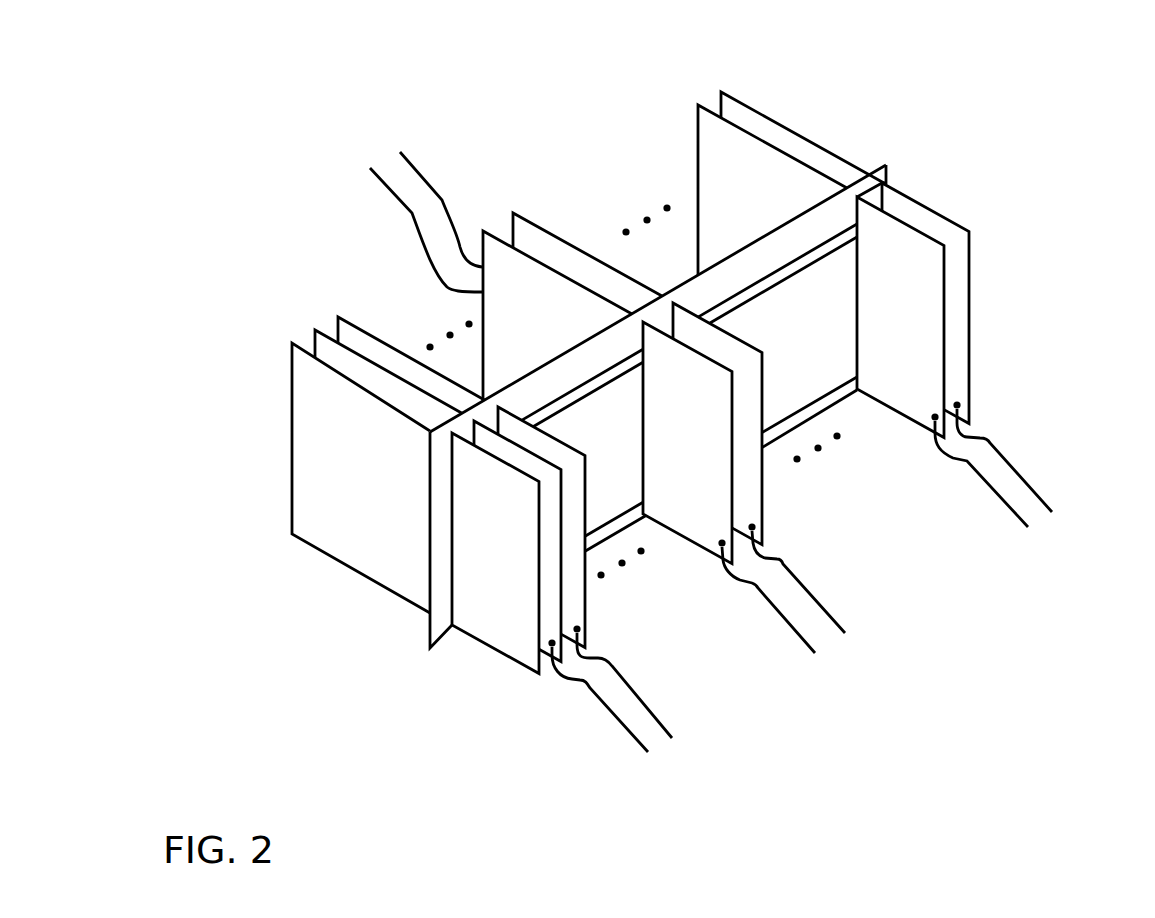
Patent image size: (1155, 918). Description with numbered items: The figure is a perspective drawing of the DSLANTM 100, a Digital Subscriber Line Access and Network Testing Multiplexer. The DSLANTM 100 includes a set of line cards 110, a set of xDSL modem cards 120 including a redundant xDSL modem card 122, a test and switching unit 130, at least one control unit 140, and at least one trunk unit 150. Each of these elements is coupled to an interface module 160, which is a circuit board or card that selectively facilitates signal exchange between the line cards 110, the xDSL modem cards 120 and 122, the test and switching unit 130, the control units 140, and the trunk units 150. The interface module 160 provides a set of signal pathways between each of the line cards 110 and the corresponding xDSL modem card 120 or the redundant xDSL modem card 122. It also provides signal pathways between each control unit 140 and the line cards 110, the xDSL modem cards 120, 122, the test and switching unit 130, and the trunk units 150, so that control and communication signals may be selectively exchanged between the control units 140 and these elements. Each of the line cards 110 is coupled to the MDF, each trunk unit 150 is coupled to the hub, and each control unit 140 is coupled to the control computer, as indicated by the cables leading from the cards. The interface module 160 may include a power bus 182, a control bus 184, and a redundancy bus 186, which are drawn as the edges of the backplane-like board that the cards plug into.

The DSLANTM 100 is at (112, 577).
The line cards 110 is at (552, 530).
The xDSL modem cards 120 is at (337, 327).
The redundant xDSL modem card 122 is at (315, 500).
The test and switching unit 130 is at (515, 638).
The control unit 140 is at (489, 235).
The trunk unit 150 is at (735, 352).
The interface module 160 is at (430, 627).
The power bus 182 is at (598, 375).
The control bus 184 is at (571, 403).
The redundancy bus 186 is at (838, 382).